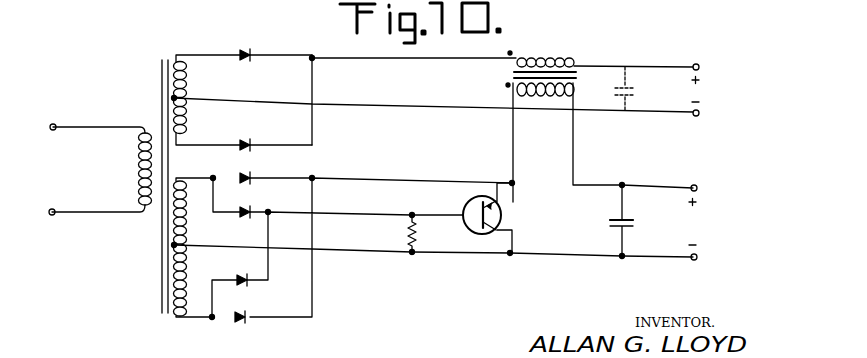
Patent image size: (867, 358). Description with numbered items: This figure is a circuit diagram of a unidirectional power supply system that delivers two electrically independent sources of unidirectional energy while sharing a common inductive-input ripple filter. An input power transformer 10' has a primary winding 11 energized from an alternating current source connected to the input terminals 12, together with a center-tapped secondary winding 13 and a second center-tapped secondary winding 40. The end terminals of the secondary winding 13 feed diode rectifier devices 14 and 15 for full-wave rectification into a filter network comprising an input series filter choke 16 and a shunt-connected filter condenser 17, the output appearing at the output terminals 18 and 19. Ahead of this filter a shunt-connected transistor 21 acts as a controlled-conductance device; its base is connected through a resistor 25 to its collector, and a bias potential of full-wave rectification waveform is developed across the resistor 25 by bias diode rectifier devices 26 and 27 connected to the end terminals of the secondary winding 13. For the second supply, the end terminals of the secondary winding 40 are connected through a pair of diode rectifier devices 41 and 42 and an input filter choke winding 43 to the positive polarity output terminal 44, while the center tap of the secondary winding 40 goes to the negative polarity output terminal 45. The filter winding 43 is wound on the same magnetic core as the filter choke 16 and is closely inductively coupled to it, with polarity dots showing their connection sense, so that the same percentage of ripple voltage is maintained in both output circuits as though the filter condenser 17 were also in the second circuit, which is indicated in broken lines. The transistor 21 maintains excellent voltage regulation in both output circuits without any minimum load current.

The input power transformer 10' is at (150, 175).
The primary winding 11 is at (139, 166).
The input terminals 12 is at (53, 131).
The center-tapped secondary winding 13 is at (182, 279).
The diode rectifier device 14 is at (243, 176).
The diode rectifier device 15 is at (243, 314).
The input series filter choke 16 is at (543, 98).
The filter condenser 17 is at (633, 222).
The output terminal 18 is at (692, 183).
The output terminal 19 is at (694, 262).
The transistor 21 is at (502, 215).
The resistor 25 is at (405, 232).
The bias diode rectifier device 26 is at (243, 210).
The bias diode rectifier device 27 is at (240, 276).
The center-tapped secondary winding 40 is at (187, 113).
The diode rectifier device 41 is at (251, 42).
The diode rectifier device 42 is at (244, 143).
The input filter choke winding 43 is at (547, 52).
The positive polarity unidirectional output terminal 44 is at (694, 63).
The negative polarity output terminal 45 is at (694, 117).